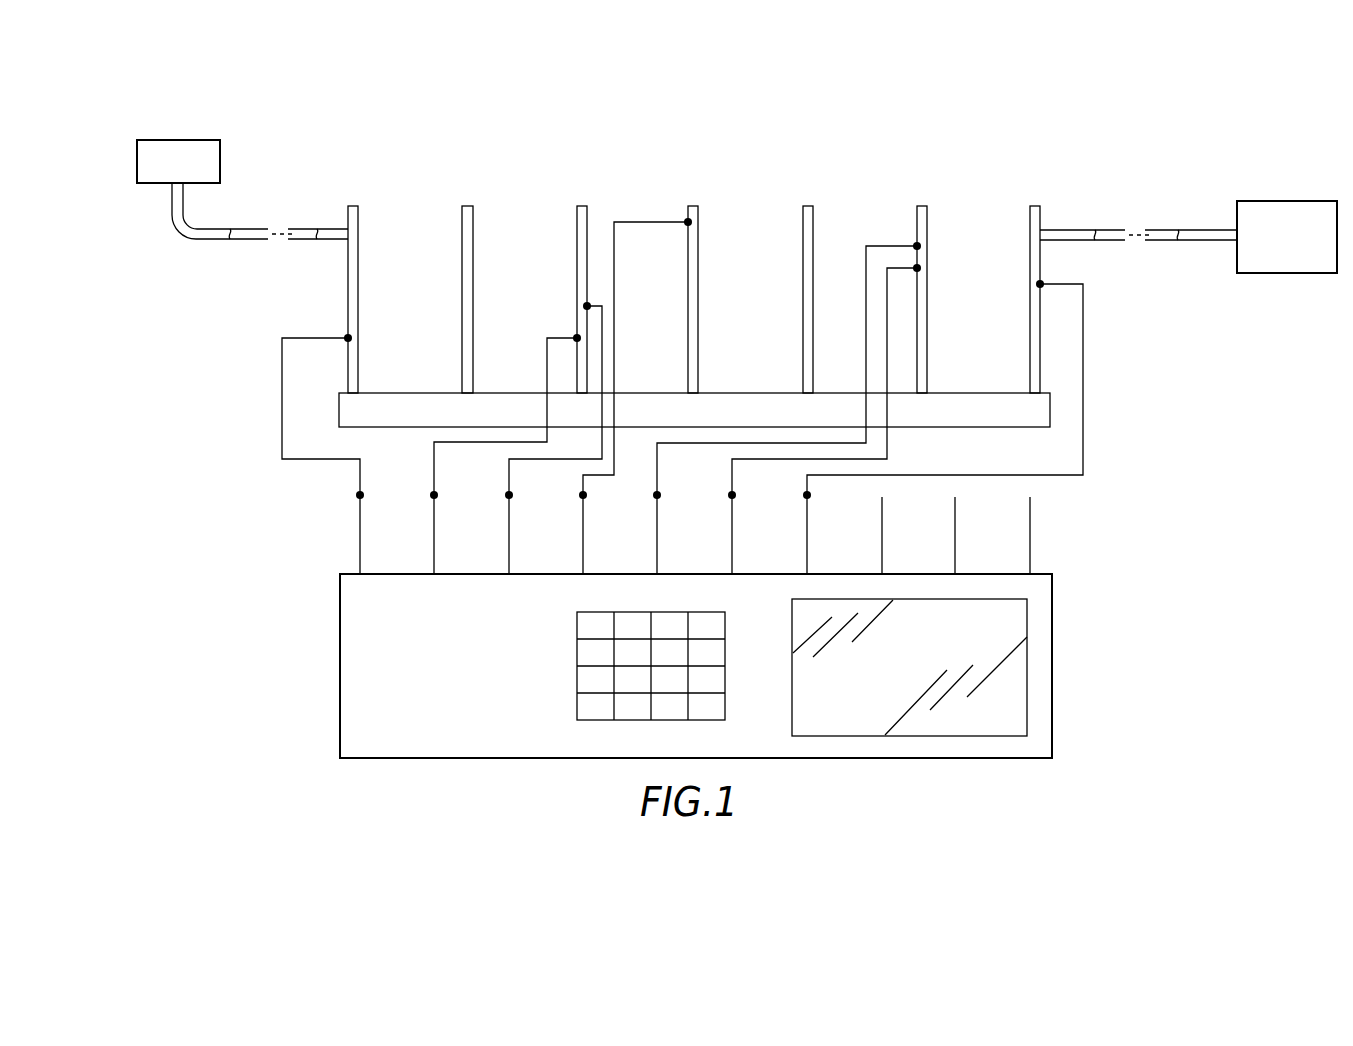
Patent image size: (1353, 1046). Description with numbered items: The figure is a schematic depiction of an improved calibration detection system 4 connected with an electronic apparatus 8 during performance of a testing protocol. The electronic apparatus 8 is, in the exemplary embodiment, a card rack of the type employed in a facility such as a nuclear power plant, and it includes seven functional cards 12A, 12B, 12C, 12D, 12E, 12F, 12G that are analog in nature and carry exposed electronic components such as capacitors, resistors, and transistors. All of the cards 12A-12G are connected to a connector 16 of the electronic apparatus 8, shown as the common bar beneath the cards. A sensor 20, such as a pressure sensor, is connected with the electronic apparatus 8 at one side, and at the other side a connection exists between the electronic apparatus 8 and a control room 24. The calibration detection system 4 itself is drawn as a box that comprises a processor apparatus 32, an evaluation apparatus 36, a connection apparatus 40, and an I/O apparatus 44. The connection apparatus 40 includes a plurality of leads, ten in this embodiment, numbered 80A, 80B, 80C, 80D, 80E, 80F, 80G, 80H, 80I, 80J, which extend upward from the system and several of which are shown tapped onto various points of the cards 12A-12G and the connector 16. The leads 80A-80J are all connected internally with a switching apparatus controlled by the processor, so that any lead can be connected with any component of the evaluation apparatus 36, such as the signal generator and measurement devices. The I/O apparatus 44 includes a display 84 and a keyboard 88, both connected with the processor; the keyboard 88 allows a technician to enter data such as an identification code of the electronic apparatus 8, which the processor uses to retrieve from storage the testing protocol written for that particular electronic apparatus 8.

The calibration detection system 4 is at (1060, 674).
The electronic apparatus 8 is at (504, 251).
The functional card 12A is at (360, 207).
The functional card 12B is at (474, 207).
The functional card 12C is at (588, 207).
The functional card 12D is at (699, 207).
The functional card 12E is at (814, 207).
The functional card 12F is at (928, 207).
The functional card 12G is at (1041, 208).
The connector 16 is at (962, 427).
The sensor 20 is at (186, 140).
The control room 24 is at (1278, 201).
The processor apparatus 32 is at (361, 737).
The evaluation apparatus 36 is at (480, 743).
The connection apparatus 40 is at (338, 571).
The I/O apparatus 44 is at (763, 721).
The lead 80A is at (362, 522).
The lead 80B is at (436, 522).
The lead 80C is at (511, 537).
The lead 80D is at (585, 536).
The lead 80E is at (659, 524).
The lead 80F is at (734, 526).
The lead 80G is at (809, 536).
The lead 80H is at (884, 540).
The lead 80I is at (957, 533).
The lead 80J is at (1032, 538).
The display 84 is at (935, 736).
The keyboard 88 is at (577, 655).